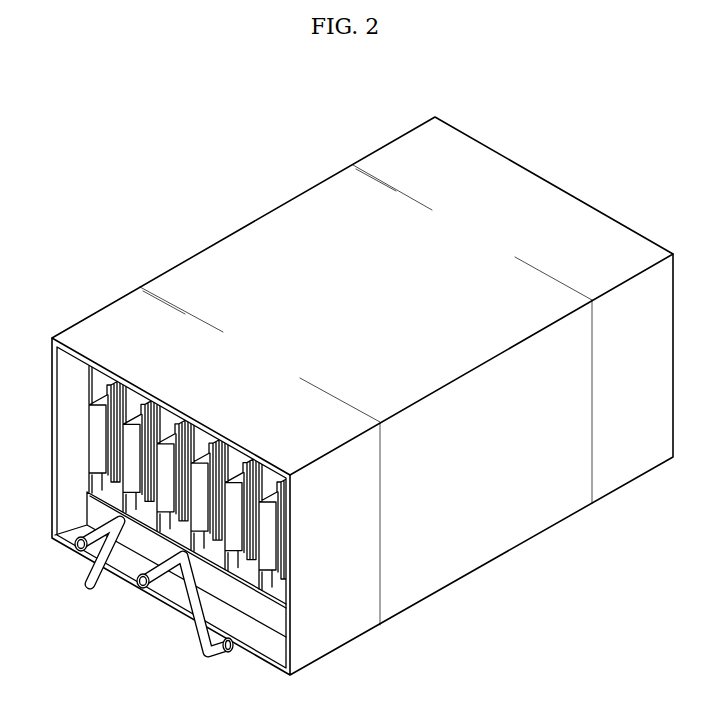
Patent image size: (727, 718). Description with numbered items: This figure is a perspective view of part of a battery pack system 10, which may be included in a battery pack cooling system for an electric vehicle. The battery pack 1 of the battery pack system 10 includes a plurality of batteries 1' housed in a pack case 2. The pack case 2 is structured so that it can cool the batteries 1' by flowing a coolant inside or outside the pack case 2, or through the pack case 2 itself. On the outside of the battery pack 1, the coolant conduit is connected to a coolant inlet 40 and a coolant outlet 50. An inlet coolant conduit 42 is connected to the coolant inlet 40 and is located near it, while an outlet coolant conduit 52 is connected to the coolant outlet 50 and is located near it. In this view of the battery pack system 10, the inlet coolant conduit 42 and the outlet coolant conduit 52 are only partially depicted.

The battery pack 1 is at (362, 396).
The batteries 1' is at (68, 429).
The pack case 2 is at (100, 328).
The battery pack system 10 is at (511, 98).
The coolant inlet 40 is at (229, 649).
The inlet coolant conduit 42 is at (207, 639).
The coolant outlet 50 is at (108, 578).
The outlet coolant conduit 52 is at (85, 572).